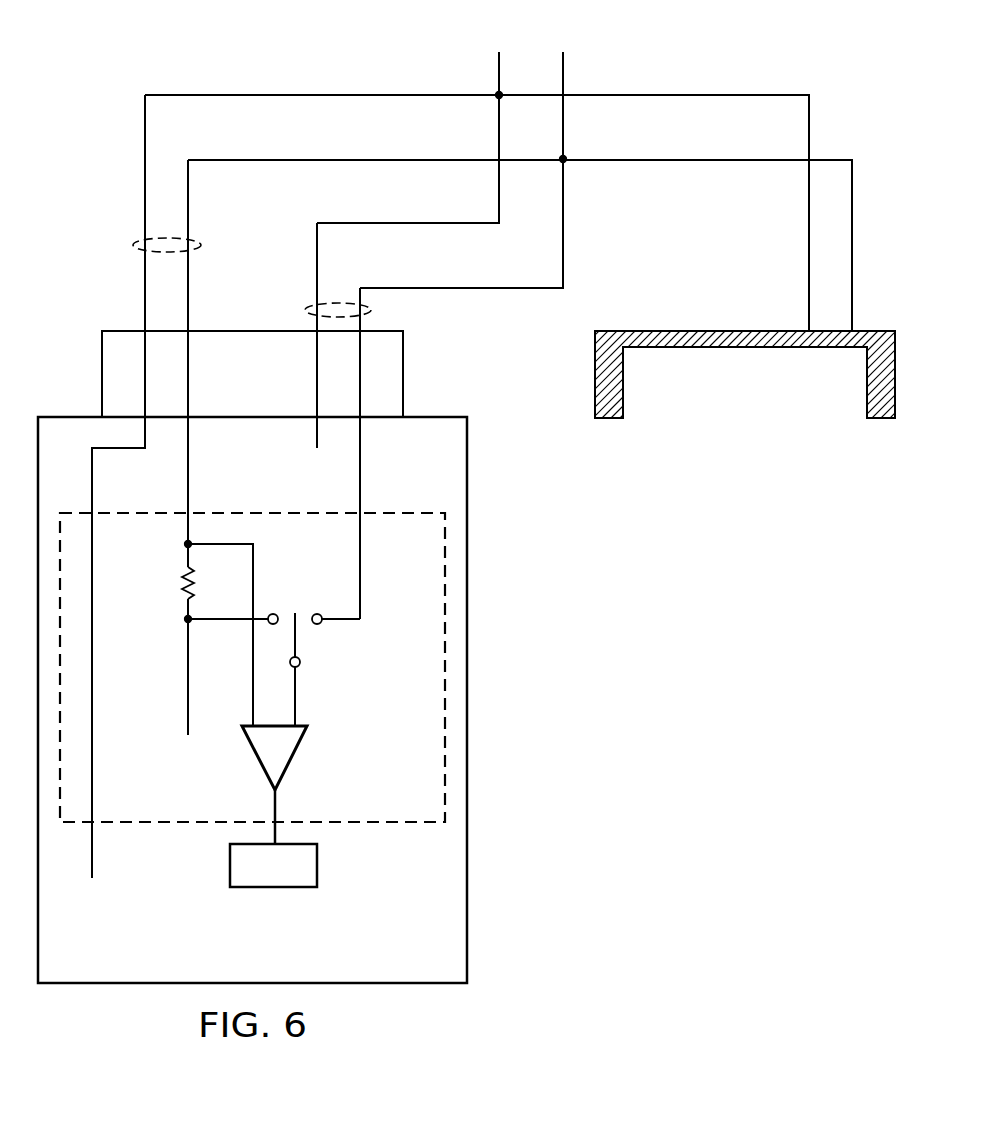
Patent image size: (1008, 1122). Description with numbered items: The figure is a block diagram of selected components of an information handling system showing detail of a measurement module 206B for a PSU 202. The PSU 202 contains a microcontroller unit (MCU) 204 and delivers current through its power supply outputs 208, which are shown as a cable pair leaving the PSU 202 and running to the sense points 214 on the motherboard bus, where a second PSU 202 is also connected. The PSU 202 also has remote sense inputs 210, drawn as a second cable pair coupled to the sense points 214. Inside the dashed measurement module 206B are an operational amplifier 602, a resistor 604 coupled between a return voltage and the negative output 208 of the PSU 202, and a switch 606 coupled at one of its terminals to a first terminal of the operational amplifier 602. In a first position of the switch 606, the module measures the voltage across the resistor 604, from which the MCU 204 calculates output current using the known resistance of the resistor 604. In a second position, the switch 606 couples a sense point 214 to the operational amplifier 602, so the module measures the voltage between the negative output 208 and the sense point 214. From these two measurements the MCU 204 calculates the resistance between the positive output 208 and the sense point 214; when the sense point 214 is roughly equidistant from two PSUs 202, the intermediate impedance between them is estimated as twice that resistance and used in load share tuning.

The PSU 202 is at (766, 423).
The microcontroller unit (MCU) 204 is at (318, 864).
The measurement module 206B is at (188, 823).
The power supply outputs 208 is at (134, 246).
The remote sense inputs 210 is at (306, 311).
The sense points 214 is at (496, 93).
The operational amplifier 602 is at (293, 759).
The resistor 604 is at (183, 581).
The switch 606 is at (298, 637).